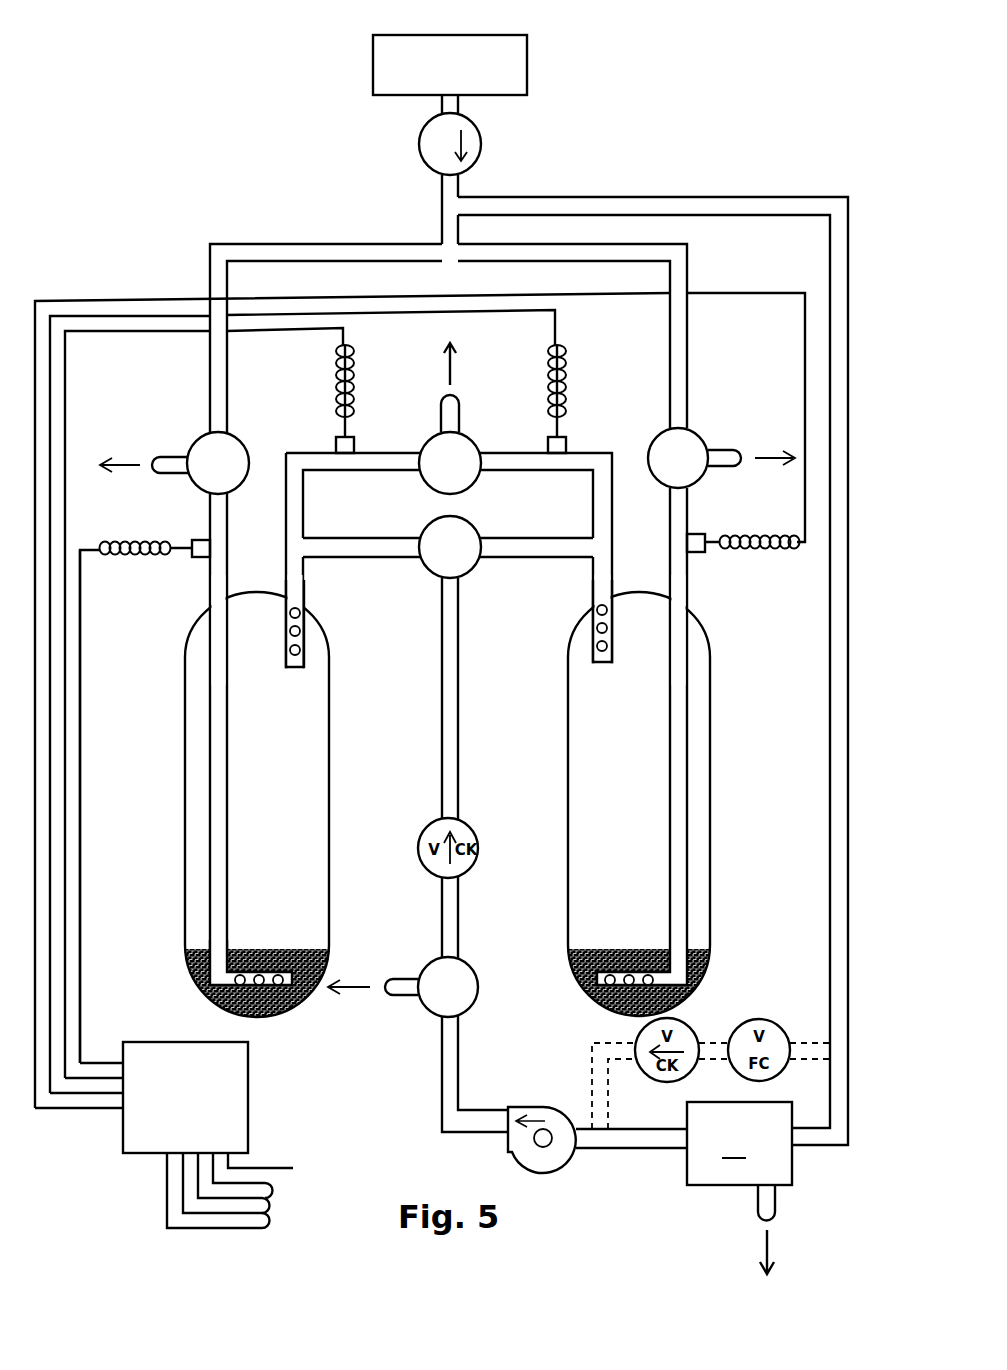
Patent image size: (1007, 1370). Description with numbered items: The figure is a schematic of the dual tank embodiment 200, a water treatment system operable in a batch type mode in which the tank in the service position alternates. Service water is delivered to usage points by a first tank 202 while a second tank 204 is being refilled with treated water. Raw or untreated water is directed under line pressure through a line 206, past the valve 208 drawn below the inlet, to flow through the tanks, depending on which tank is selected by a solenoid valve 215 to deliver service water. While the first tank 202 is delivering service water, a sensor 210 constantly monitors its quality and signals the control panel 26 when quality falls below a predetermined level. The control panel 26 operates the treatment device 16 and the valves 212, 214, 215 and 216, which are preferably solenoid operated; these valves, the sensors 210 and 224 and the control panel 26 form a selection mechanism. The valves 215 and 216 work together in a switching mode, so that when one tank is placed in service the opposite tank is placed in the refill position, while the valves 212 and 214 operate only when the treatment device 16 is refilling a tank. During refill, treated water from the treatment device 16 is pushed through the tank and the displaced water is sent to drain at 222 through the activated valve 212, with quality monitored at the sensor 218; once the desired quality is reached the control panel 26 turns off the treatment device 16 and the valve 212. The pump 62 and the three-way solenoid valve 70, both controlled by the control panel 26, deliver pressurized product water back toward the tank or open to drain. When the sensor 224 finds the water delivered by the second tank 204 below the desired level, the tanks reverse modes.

The dual tank embodiment 200 is at (200, 142).
The line 206 is at (468, 78).
The shut-off valve 208 is at (481, 146).
The sensor 210 is at (335, 387).
The valve 212 is at (197, 492).
The valve 214 is at (700, 437).
The solenoid valve 215 is at (473, 437).
The valve 216 is at (477, 565).
The sensor 218 is at (118, 1183).
The drain 222 is at (168, 450).
The sensor 224 is at (568, 450).
The first tank 202 is at (294, 776).
The second tank 204 is at (646, 776).
The three-way solenoid valve 70 is at (425, 1012).
The control panel 26 is at (196, 1108).
The treatment device 16 is at (267, 1168).
The pressure pump 62 is at (552, 1172).